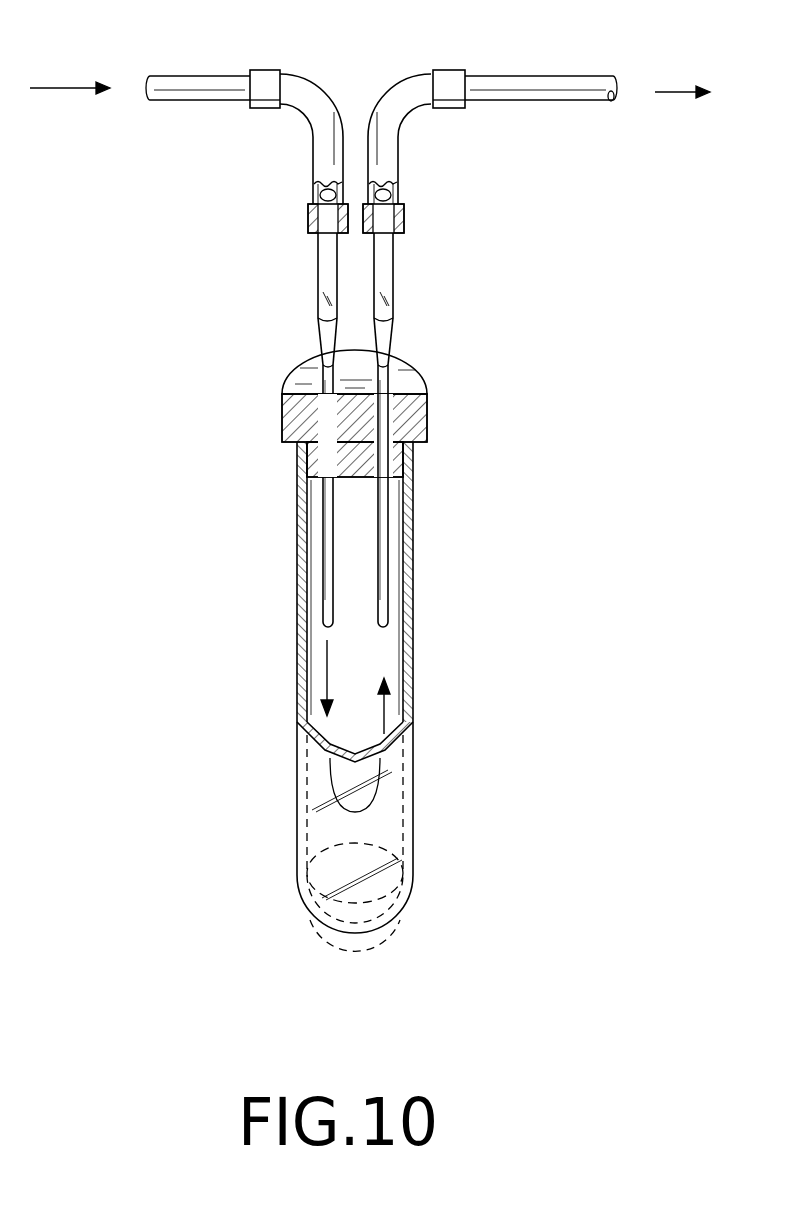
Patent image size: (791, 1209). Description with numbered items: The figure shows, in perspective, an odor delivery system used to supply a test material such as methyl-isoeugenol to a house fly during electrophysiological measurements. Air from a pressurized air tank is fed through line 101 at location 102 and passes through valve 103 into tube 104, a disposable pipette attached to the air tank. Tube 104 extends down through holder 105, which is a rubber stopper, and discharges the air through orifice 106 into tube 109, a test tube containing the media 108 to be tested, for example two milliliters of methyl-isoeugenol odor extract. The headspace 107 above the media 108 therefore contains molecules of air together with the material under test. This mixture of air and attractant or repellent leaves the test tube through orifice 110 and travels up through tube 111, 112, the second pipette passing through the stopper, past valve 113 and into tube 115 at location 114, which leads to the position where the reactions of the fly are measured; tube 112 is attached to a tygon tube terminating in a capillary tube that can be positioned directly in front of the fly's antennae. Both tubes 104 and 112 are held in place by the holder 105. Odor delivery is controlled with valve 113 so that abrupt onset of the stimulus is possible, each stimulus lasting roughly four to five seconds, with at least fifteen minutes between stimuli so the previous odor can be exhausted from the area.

The line 101 is at (78, 88).
The location 102 is at (302, 90).
The valve 103 is at (314, 182).
The tube 104 is at (323, 267).
The holder 105 is at (420, 390).
The orifice 106 is at (318, 618).
The headspace 107 is at (355, 833).
The media 108 is at (338, 912).
The tube 109 is at (407, 818).
The orifice 110 is at (392, 612).
The tube 111 is at (382, 558).
The tube 112 is at (388, 270).
The valve 113 is at (396, 182).
The location 114 is at (402, 95).
The tube 115 is at (660, 92).